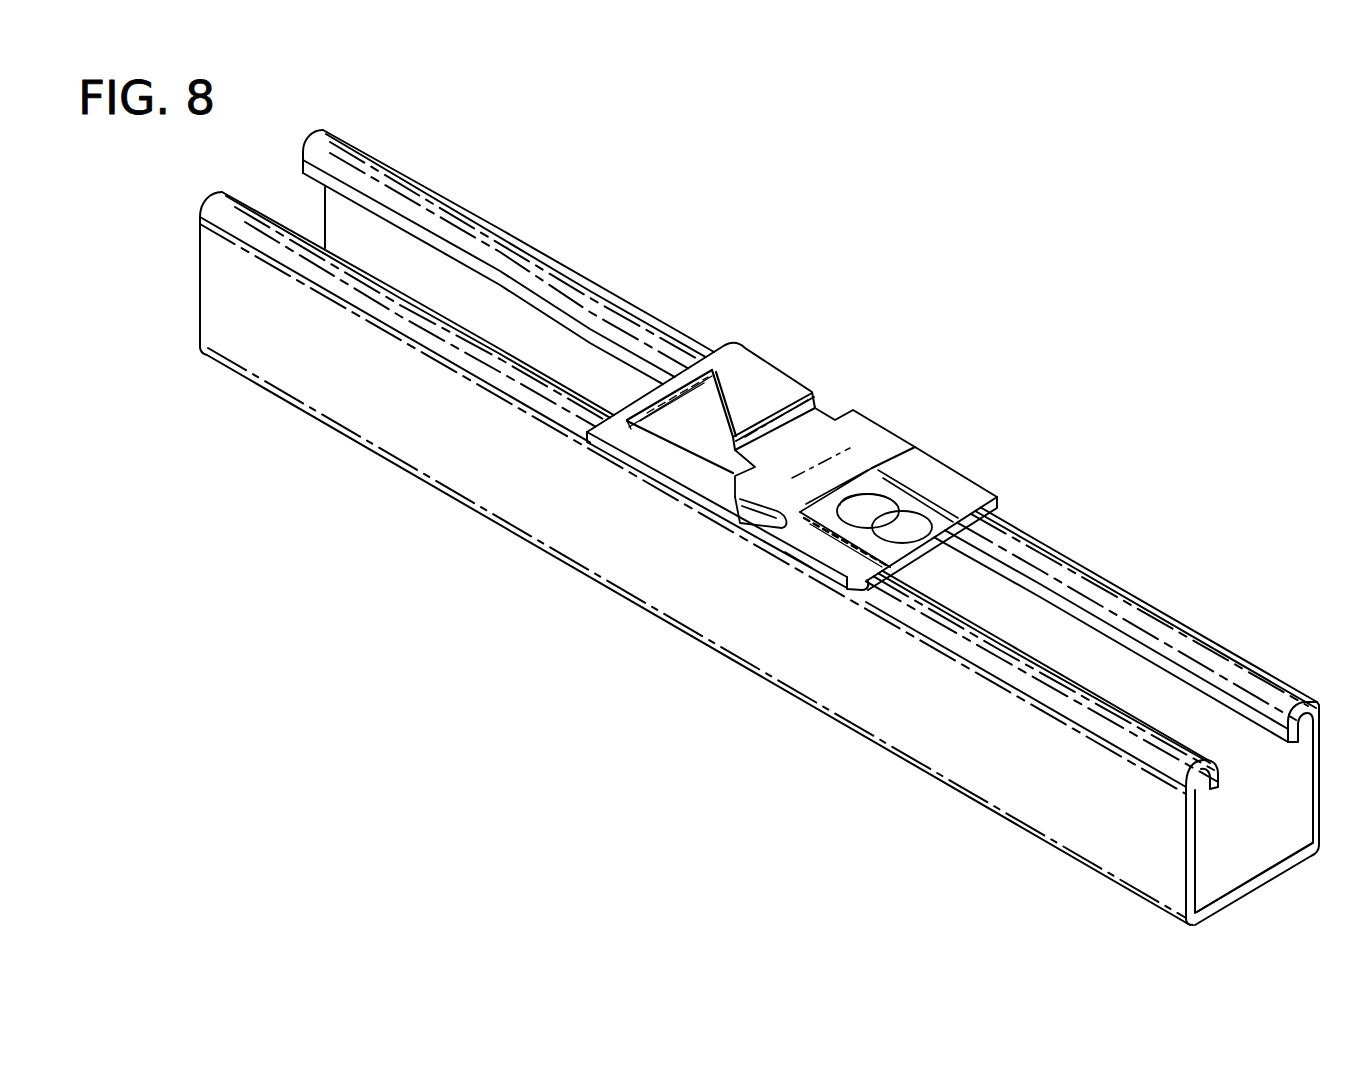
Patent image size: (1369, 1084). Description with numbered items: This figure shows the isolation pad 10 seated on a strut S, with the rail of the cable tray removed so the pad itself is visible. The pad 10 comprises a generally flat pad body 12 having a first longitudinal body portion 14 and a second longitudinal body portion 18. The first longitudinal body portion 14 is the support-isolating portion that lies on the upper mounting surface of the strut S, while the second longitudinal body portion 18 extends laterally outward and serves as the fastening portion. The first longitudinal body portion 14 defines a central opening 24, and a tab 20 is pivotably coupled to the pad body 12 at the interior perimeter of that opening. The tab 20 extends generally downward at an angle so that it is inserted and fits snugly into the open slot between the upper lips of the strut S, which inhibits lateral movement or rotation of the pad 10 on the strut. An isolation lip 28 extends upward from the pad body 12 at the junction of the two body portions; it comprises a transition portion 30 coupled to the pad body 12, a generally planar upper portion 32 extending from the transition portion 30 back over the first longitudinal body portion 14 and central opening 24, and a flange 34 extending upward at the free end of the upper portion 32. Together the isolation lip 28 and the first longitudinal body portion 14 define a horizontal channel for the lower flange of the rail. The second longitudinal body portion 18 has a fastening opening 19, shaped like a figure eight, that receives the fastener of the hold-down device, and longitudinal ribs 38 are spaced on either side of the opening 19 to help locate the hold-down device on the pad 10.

The isolation pad 10 is at (780, 350).
The pad body 12 is at (638, 386).
The first longitudinal body portion 14 is at (596, 433).
The second longitudinal body portion 18 is at (800, 558).
The fastening opening 19 is at (897, 527).
The tab 20 is at (702, 433).
The central opening 24 is at (708, 451).
The isolation lip 28 is at (886, 424).
The transition portion 30 is at (789, 508).
The upper portion 32 is at (728, 455).
The flange 34 is at (812, 400).
The longitudinal ribs 38 is at (982, 495).
The strut S is at (1153, 608).